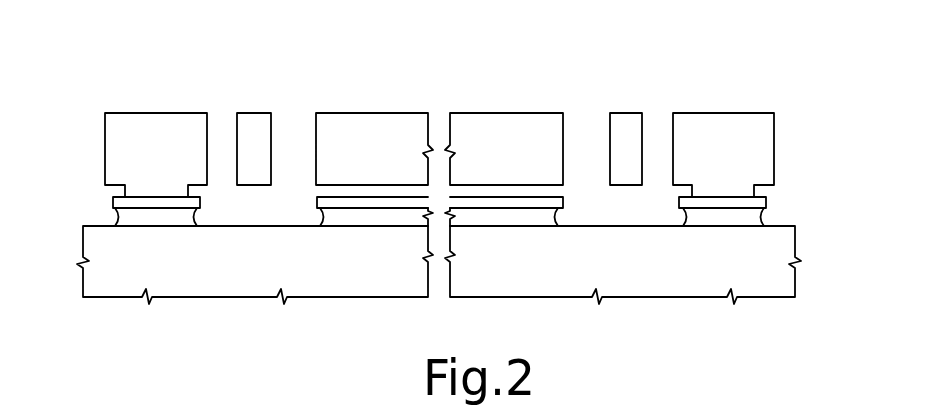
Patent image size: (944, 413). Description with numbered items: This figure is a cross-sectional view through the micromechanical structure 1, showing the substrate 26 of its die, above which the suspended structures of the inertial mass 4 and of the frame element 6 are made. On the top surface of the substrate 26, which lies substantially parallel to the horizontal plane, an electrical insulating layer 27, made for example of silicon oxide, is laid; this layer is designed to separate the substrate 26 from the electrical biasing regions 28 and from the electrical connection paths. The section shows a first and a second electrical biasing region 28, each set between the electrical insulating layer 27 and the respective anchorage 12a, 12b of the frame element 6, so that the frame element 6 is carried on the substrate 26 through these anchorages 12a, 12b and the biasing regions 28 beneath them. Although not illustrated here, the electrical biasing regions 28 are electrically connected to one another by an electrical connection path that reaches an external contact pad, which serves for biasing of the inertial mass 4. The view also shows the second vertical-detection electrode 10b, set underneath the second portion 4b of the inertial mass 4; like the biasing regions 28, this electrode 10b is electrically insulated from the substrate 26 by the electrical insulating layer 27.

The micromechanical structure 1 is at (55, 60).
The inertial mass 4 is at (439, 106).
The second portion of the inertial mass 4b is at (463, 125).
The frame element 6 is at (250, 125).
The second vertical-detection electrode 10b is at (320, 203).
The anchorage 12a is at (158, 140).
The anchorage 12b is at (767, 133).
The substrate 26 is at (785, 240).
The electrical insulating layer 27 is at (125, 214).
The electrical biasing regions 28 is at (113, 200).